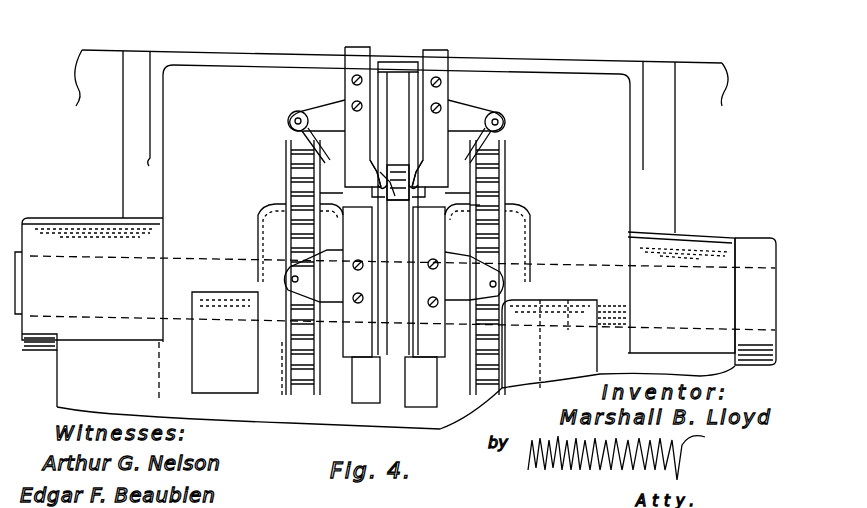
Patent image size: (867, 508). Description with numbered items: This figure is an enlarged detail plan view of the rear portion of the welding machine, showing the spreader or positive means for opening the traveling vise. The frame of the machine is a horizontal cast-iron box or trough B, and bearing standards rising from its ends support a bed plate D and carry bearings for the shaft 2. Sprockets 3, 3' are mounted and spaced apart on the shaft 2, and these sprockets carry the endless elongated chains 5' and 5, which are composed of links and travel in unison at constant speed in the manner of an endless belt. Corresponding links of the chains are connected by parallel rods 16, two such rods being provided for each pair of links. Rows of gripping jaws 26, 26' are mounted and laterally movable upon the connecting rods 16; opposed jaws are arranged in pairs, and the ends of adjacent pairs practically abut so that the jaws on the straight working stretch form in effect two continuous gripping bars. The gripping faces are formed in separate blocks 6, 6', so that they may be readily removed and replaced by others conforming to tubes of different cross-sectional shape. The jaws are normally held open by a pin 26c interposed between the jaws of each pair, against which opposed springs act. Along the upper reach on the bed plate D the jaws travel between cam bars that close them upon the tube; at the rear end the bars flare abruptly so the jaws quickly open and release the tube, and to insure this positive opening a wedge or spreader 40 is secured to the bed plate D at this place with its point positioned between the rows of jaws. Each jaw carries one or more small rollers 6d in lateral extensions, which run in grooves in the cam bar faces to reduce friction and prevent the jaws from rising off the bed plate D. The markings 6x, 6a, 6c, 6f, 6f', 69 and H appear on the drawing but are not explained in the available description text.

The shaft 2 is at (182, 268).
The sprocket 3 is at (286, 243).
The sprocket 3' is at (504, 243).
The endless chain 5 is at (287, 267).
The endless chain 5' is at (519, 267).
The gripping block 6 is at (361, 305).
The gripping block 6' is at (425, 307).
The upper clamping bar 6x is at (420, 62).
The pivot hub 6a is at (536, 134).
The lower block 6c is at (506, 385).
The roller 6d is at (536, 288).
The bar nose 6f is at (364, 172).
The bar nose 6f' is at (427, 173).
The connecting rod 16 is at (392, 165).
The gripping jaw 26 is at (317, 120).
The gripping jaw 26' is at (475, 122).
The pin 26c is at (428, 438).
The spreader 40 is at (480, 206).
The lower block 69 is at (266, 372).
The box or trough B is at (645, 63).
The bed plate D is at (57, 385).
The section marker H is at (590, 290).